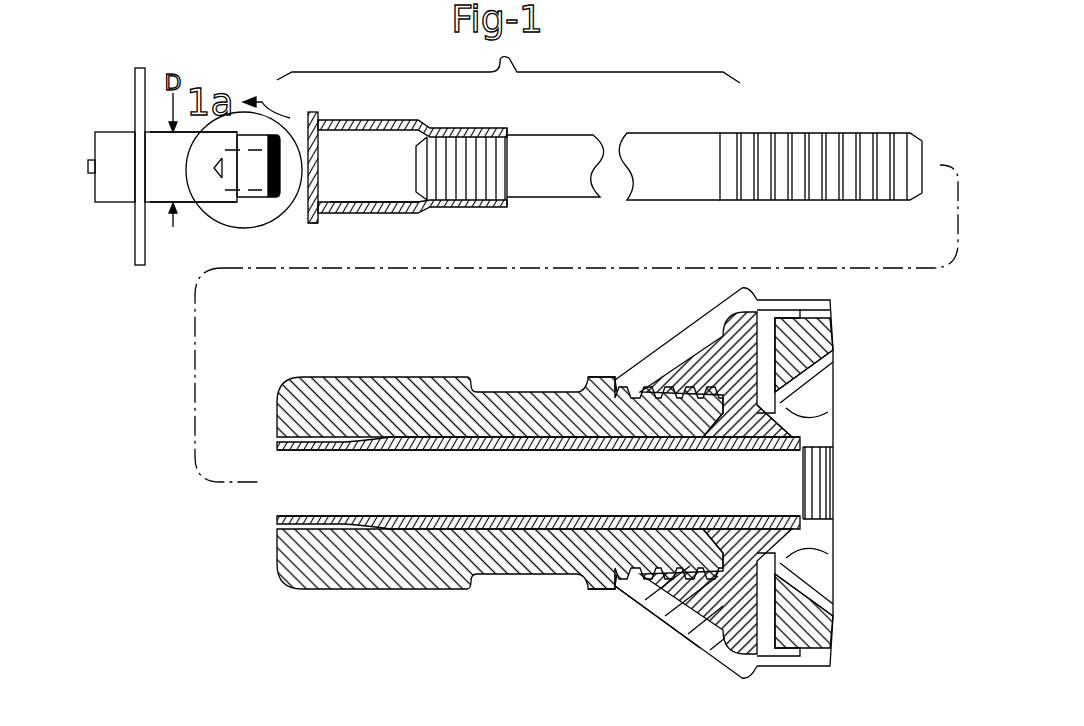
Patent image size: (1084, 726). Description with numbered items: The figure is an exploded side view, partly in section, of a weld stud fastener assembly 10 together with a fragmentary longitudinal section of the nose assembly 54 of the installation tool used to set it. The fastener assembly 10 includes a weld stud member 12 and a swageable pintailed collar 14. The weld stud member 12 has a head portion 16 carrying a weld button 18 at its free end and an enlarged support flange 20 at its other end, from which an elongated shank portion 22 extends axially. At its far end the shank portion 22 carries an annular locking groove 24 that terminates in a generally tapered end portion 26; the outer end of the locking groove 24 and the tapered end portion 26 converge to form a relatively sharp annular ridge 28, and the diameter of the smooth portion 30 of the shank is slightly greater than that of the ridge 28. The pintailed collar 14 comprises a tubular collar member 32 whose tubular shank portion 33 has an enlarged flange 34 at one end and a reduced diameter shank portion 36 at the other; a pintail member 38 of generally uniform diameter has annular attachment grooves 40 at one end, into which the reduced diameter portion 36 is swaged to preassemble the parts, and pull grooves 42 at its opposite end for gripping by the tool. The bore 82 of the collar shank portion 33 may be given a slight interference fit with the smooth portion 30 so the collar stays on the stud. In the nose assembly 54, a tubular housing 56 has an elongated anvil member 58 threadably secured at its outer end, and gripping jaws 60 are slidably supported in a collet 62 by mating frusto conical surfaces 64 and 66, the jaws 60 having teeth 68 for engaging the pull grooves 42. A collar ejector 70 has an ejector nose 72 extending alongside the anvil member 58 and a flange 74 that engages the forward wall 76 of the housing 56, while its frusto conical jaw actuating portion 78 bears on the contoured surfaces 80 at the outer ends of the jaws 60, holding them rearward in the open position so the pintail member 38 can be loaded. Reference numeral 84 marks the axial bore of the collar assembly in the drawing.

The weld stud fastener assembly 10 is at (508, 62).
The weld stud member 12 is at (195, 209).
The pintailed collar 14 is at (557, 221).
The head portion 16 is at (115, 140).
The weld button 18 is at (90, 178).
The support flange 20 is at (145, 78).
The shank portion 22 is at (192, 126).
The locking groove 24 is at (262, 200).
The tapered end portion 26 is at (282, 198).
The annular ridge 28 is at (262, 102).
The smooth portion 30 is at (163, 183).
The collar member 32 is at (383, 120).
The tubular shank portion 33 is at (367, 113).
The enlarged flange 34 is at (313, 222).
The reduced diameter shank portion 36 is at (463, 130).
The pintail member 38 is at (665, 187).
The attachment grooves 40 is at (490, 163).
The pull grooves 42 is at (787, 147).
The nose assembly 54 is at (615, 608).
The tubular housing 56 is at (697, 627).
The anvil member 58 is at (430, 390).
The gripping jaws 60 is at (820, 400).
The collet 62 is at (828, 340).
The frusto conical surface 64 is at (808, 378).
The frusto conical surface 66 is at (813, 402).
The teeth 68 is at (827, 457).
The collar ejector 70 is at (572, 420).
The ejector nose 72 is at (598, 390).
The flange 74 is at (773, 640).
The forward wall 76 is at (736, 334).
The jaw actuating portion 78 is at (782, 440).
The contoured surfaces 80 is at (800, 513).
The collar bore 82 is at (363, 203).
The bore 84 is at (335, 527).